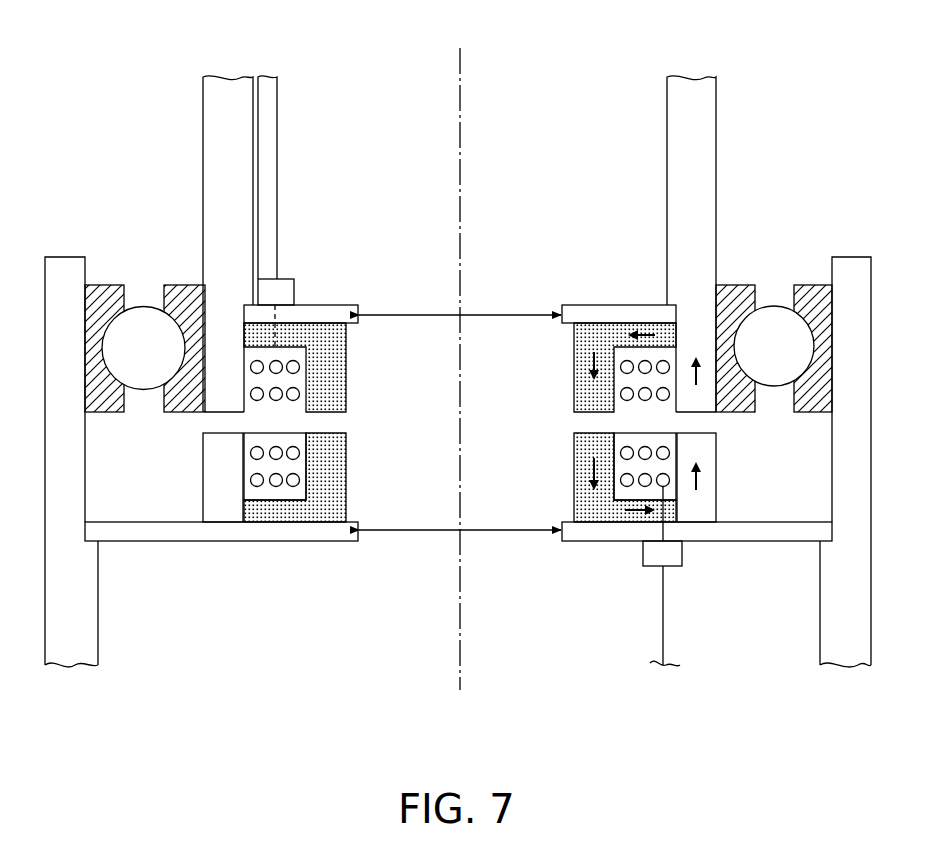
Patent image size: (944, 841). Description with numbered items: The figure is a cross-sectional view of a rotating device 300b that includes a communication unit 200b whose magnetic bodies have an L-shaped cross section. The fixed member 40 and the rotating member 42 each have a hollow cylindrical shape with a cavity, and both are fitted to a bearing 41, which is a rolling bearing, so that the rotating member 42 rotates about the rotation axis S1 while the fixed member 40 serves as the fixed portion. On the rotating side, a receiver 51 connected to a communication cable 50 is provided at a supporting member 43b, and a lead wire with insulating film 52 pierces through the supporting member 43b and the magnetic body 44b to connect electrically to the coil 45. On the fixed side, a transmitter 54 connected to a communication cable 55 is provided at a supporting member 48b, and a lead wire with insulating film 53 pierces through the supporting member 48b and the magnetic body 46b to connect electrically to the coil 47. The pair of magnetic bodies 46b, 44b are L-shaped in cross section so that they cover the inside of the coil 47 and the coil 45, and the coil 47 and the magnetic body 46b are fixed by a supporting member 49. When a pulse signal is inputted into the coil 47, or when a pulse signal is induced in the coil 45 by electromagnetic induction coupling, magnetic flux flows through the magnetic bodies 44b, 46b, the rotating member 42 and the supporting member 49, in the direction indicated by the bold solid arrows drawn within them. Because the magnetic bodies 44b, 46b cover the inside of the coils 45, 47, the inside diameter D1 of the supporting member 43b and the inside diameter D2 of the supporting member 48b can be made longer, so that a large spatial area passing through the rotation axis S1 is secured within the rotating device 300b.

The fixed member 40 is at (98, 603).
The bearing 41 is at (105, 284).
The rotating member 42 is at (213, 157).
The supporting member 43b is at (338, 316).
The magnetic body 44b is at (345, 368).
The coil 45 is at (293, 400).
The magnetic body 46b is at (345, 475).
The coil 47 is at (291, 486).
The supporting member 48b is at (219, 530).
The supporting member 49 is at (205, 478).
The communication cable 50 is at (279, 150).
The receiver 51 is at (282, 288).
The lead wire with insulating film 52 is at (276, 318).
The lead wire with insulating film 53 is at (657, 528).
The transmitter 54 is at (683, 552).
The communication cable 55 is at (665, 600).
The communication unit 200b is at (604, 274).
The rotating device 300b is at (596, 31).
The rotation axis S1 is at (461, 128).
The inside diameter D1 is at (460, 303).
The inside diameter D2 is at (460, 519).